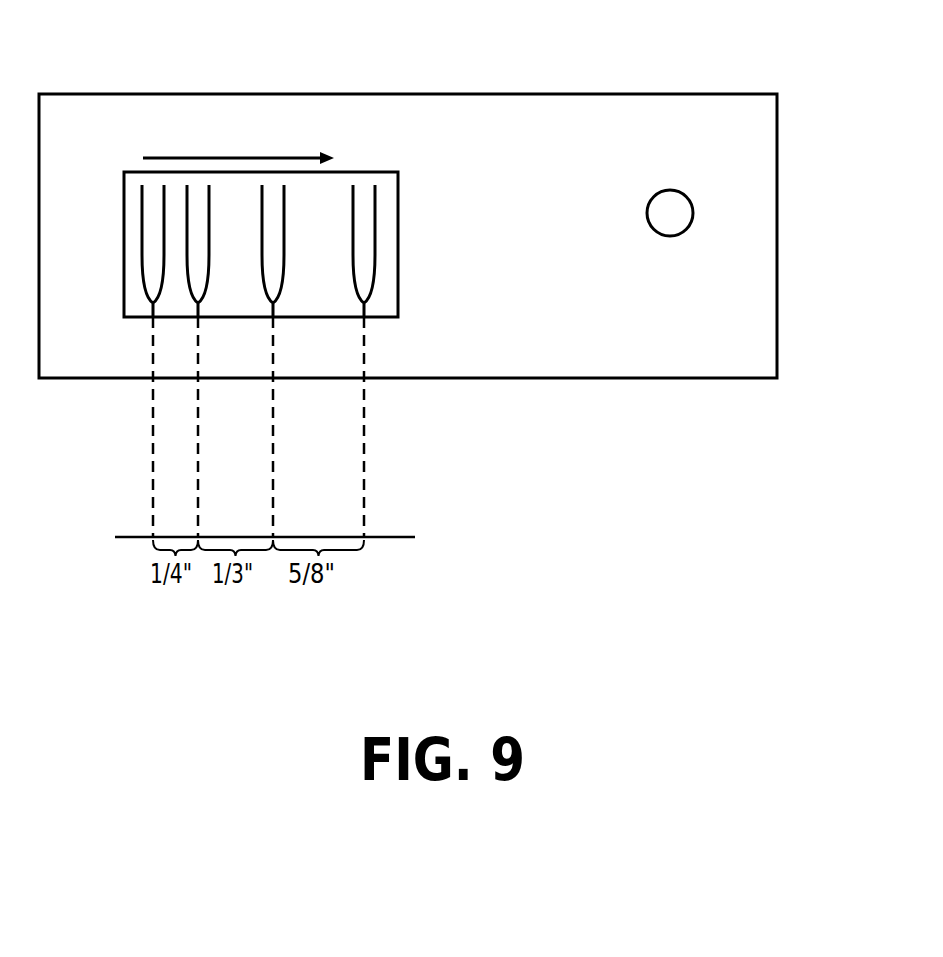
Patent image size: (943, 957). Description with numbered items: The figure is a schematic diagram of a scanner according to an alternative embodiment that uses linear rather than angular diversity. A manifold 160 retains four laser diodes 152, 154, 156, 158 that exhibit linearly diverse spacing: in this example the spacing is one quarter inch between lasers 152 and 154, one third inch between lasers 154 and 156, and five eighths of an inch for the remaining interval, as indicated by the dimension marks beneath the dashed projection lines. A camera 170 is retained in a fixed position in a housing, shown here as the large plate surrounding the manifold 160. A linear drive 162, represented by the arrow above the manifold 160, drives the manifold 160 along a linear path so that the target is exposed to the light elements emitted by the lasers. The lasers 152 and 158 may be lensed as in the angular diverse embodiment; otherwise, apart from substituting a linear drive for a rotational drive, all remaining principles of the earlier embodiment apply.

The laser diode 152 is at (375, 213).
The laser diode 154 is at (275, 237).
The laser diode 156 is at (200, 237).
The laser diode 158 is at (155, 240).
The manifold 160 is at (388, 270).
The linear drive 162 is at (202, 157).
The camera 170 is at (690, 197).